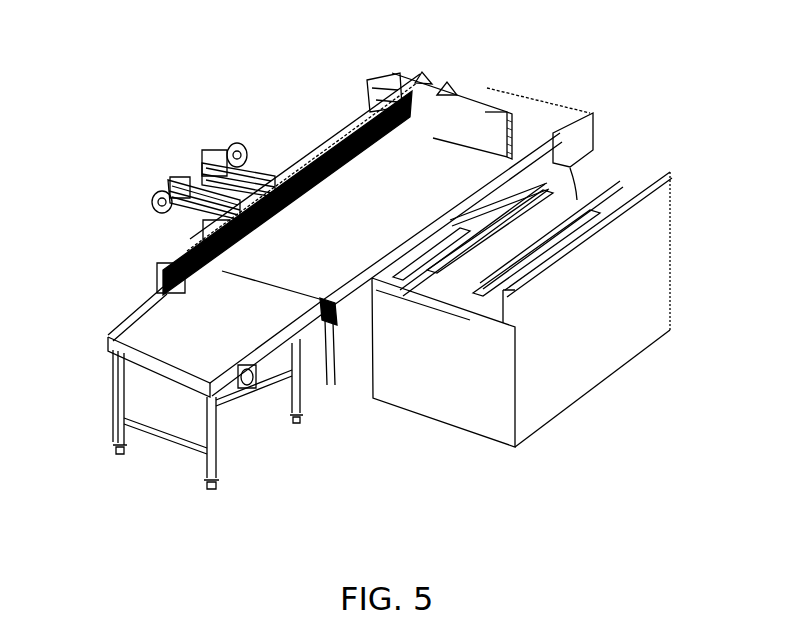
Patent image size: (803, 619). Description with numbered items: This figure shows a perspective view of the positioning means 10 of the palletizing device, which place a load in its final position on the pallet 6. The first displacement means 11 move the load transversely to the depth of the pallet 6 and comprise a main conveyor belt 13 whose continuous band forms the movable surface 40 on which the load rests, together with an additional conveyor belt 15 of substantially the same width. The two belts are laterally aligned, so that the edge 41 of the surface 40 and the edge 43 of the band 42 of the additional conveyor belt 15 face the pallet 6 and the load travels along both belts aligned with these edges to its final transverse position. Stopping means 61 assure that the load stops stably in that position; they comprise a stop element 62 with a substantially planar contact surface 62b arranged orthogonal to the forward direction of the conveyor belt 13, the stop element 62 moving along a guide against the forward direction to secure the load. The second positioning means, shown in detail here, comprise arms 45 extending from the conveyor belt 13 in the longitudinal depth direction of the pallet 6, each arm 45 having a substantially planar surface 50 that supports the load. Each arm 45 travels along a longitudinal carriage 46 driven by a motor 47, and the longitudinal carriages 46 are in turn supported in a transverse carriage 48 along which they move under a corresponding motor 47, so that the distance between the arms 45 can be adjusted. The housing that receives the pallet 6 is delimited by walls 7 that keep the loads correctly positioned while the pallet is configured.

The pallet 6 is at (597, 200).
The housing 7 is at (615, 305).
The positioning means 10 is at (64, 320).
The first displacement means 11 is at (192, 368).
The conveyor belt 13 is at (357, 260).
The additional conveyor belt 15 is at (163, 355).
The surface 40 is at (338, 258).
The edge 41 is at (373, 282).
The band 42 is at (255, 318).
The edge 43 is at (253, 382).
The arm 45 is at (467, 260).
The longitudinal carriage 46 is at (250, 170).
The motor 47 is at (232, 148).
The transverse carriage 48 is at (190, 265).
The surface 50 is at (448, 258).
The stopping means 61 is at (485, 112).
The stop element 62 is at (415, 73).
The contact surface 62b is at (452, 116).